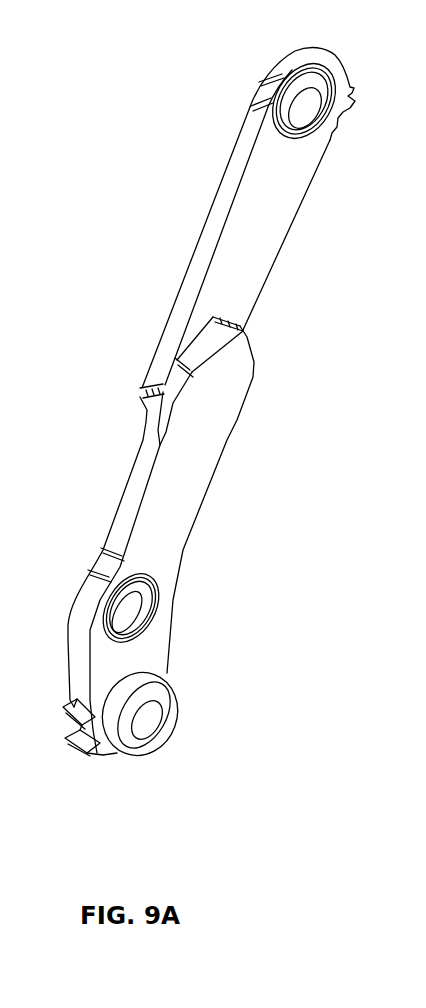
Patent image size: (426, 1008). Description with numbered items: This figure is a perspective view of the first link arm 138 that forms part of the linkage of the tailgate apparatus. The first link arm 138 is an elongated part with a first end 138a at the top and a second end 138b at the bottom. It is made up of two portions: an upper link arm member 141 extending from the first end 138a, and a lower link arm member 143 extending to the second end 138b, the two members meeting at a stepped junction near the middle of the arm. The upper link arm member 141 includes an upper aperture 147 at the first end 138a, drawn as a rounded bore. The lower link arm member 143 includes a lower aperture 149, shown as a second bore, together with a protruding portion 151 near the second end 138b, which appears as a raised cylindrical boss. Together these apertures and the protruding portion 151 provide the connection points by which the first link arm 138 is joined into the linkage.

The first link arm 138 is at (174, 132).
The first end 138a is at (339, 90).
The second end 138b is at (104, 748).
The upper link arm member 141 is at (273, 207).
The lower link arm member 143 is at (178, 482).
The upper aperture 147 is at (306, 102).
The lower aperture 149 is at (128, 618).
The protruding portion 151 is at (142, 717).